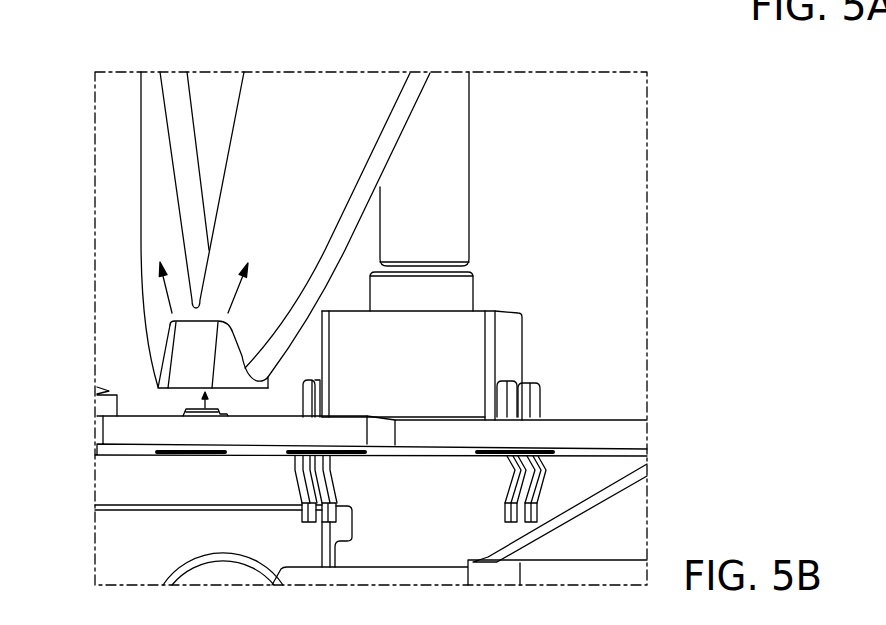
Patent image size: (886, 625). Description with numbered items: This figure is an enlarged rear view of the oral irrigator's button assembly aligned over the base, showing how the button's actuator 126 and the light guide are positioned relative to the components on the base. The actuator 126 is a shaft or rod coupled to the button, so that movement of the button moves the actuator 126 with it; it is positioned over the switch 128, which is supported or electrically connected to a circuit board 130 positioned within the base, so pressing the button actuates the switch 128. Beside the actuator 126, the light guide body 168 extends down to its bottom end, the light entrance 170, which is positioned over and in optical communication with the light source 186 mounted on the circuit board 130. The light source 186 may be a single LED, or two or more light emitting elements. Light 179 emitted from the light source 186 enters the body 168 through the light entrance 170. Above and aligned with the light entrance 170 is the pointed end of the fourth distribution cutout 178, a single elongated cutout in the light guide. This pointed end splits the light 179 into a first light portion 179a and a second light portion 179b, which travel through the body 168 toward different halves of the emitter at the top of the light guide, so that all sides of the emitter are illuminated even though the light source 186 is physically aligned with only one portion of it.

The actuator 126 is at (447, 152).
The switch 128 is at (435, 297).
The circuit board 130 is at (612, 438).
The body 168 is at (333, 125).
The light entrance 170 is at (133, 416).
The fourth distribution cutout 178 is at (215, 104).
The light 179 is at (208, 402).
The first light portion 179a is at (167, 290).
The second light portion 179b is at (237, 298).
The light source 186 is at (188, 381).